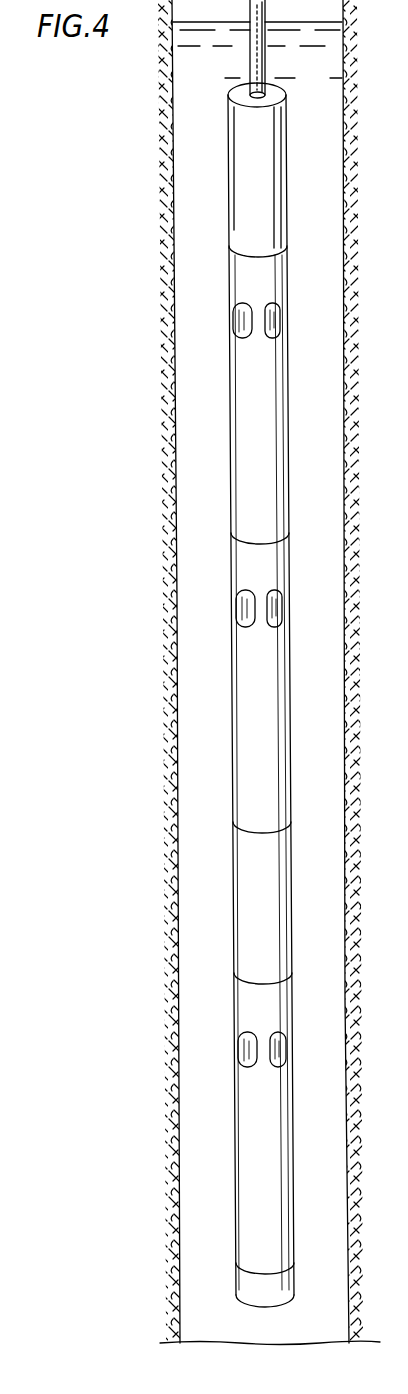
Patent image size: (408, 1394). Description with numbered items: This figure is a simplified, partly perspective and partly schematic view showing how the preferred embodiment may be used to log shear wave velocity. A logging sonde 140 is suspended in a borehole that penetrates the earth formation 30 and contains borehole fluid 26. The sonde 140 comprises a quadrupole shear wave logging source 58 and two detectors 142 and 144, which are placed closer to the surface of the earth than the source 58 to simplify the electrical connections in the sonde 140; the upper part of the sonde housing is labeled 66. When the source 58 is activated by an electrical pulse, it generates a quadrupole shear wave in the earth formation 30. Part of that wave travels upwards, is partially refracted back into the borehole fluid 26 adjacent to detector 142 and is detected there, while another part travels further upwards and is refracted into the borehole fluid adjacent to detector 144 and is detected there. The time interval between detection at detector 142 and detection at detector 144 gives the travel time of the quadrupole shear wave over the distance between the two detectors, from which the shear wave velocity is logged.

The borehole fluid 26 is at (323, 75).
The earth formation 30 is at (150, 180).
The quadrupole shear wave logging source 58 is at (236, 1040).
The housing 66 is at (258, 130).
The logging sonde 140 is at (291, 653).
The detector 142 is at (229, 594).
The detector 144 is at (227, 321).